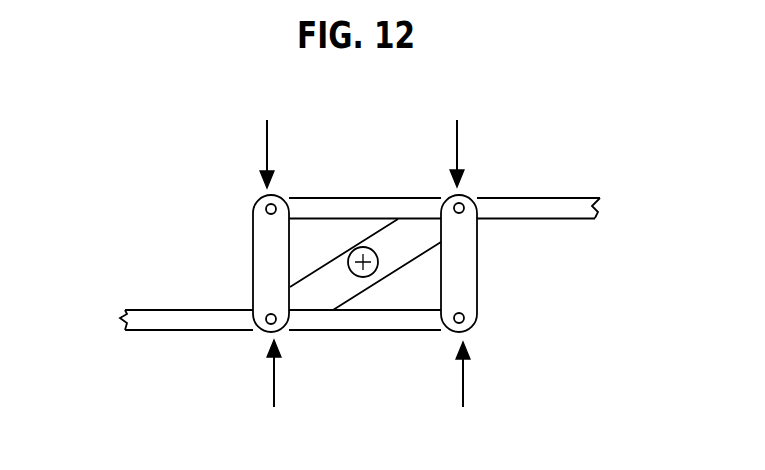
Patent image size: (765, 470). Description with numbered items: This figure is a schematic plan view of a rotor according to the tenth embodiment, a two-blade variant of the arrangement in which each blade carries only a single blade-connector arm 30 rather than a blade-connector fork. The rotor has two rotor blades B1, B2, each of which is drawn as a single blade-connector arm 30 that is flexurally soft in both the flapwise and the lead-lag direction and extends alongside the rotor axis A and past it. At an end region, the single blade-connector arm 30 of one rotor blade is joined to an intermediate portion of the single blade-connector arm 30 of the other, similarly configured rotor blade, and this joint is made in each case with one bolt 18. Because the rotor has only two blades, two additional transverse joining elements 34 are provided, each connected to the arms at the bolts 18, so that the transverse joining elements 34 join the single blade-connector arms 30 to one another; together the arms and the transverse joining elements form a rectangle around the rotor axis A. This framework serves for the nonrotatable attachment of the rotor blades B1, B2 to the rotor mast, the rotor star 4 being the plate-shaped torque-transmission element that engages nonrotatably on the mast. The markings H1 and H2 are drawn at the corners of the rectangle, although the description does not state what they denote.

The rotor star 4 is at (327, 292).
The bolt 18 is at (258, 200).
The single blade-connector arm 30 is at (195, 318).
The transverse joining element 34 is at (260, 263).
The rotor axis A is at (364, 268).
The force direction H1 is at (365, 262).
The force direction H2 is at (365, 266).
The rotor blade B1 is at (592, 207).
The rotor blade B2 is at (122, 313).